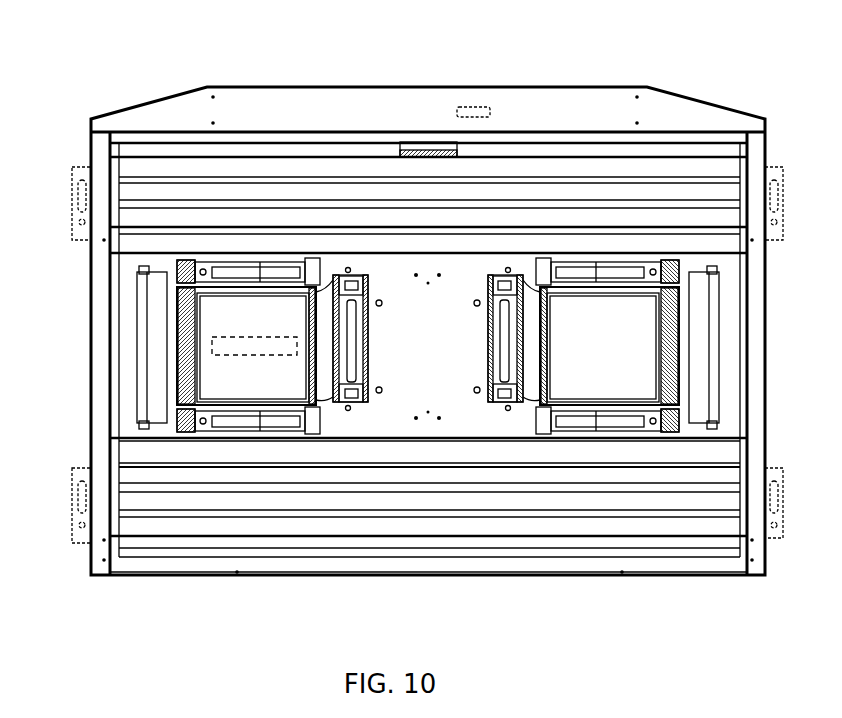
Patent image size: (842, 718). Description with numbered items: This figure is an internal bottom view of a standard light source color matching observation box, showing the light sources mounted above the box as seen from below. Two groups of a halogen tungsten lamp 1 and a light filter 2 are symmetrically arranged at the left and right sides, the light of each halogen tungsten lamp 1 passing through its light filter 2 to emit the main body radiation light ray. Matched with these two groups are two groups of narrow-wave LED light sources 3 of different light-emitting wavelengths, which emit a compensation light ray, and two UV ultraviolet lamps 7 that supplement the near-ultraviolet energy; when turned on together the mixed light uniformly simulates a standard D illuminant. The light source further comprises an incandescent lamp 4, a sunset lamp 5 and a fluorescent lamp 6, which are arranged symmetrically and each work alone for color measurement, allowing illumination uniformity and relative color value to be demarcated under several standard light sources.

The halogen tungsten lamp 1 is at (215, 346).
The light filter 2 is at (220, 383).
The narrow-wave LED light source 3 is at (52, 410).
The incandescent lamp 4 is at (348, 320).
The sunset lamp 5 is at (233, 270).
The fluorescent lamp 6 is at (182, 473).
The UV ultraviolet lamp 7 is at (182, 449).